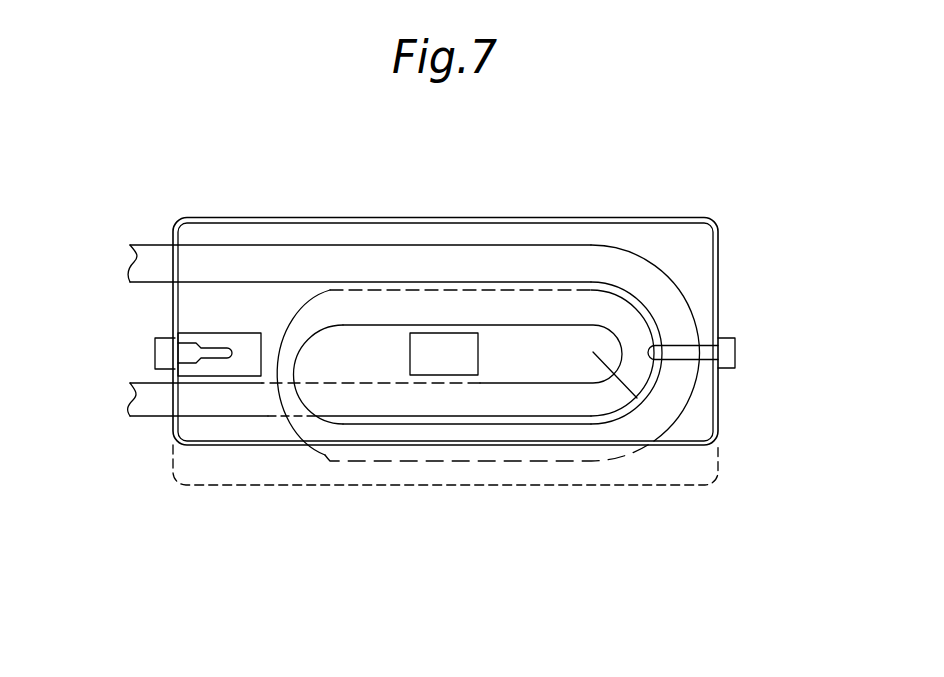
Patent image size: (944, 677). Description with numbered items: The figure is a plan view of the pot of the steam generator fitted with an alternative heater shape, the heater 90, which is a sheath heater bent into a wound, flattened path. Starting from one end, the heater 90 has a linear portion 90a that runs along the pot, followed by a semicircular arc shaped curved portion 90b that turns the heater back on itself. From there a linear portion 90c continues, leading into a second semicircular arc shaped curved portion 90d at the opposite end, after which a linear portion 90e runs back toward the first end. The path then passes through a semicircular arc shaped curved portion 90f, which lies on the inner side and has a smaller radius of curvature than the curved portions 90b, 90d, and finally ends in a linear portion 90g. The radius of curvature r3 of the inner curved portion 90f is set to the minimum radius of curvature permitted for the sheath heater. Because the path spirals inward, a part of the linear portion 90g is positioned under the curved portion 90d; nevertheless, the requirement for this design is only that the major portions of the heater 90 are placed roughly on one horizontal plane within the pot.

The heater 90 is at (452, 243).
The linear portion 90a is at (370, 245).
The semicircular arc shaped curved portion 90b is at (678, 335).
The linear portion 90c is at (505, 450).
The semicircular arc shaped curved portion 90d is at (287, 338).
The linear portion 90e is at (503, 303).
The semicircular arc shaped curved portion 90f is at (632, 367).
The linear portion 90g is at (378, 383).
The radius of curvature r3 is at (603, 361).